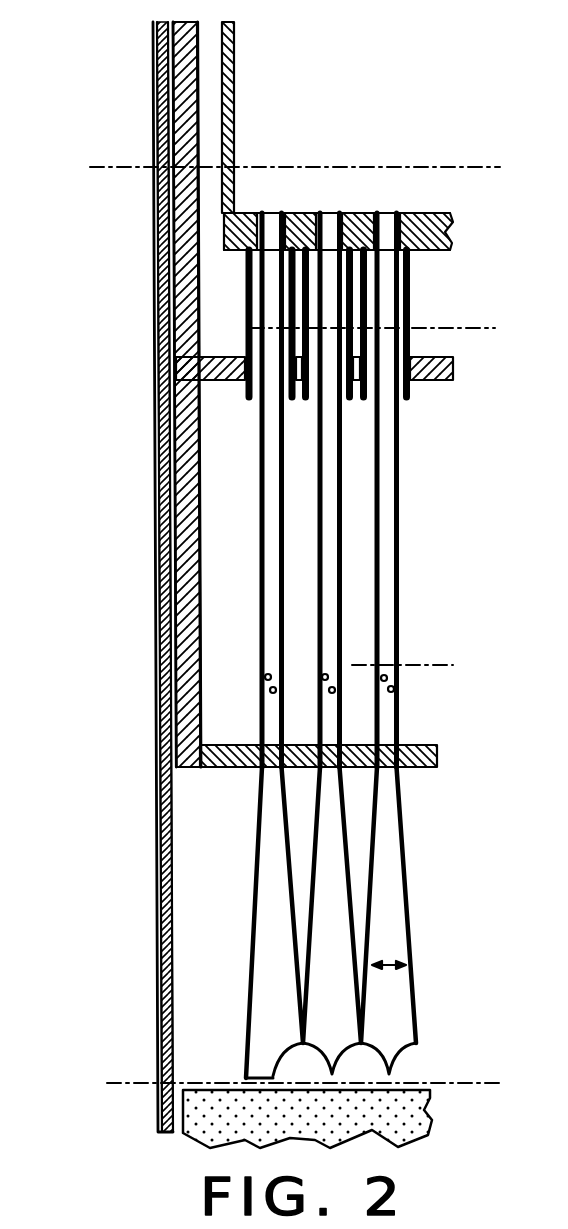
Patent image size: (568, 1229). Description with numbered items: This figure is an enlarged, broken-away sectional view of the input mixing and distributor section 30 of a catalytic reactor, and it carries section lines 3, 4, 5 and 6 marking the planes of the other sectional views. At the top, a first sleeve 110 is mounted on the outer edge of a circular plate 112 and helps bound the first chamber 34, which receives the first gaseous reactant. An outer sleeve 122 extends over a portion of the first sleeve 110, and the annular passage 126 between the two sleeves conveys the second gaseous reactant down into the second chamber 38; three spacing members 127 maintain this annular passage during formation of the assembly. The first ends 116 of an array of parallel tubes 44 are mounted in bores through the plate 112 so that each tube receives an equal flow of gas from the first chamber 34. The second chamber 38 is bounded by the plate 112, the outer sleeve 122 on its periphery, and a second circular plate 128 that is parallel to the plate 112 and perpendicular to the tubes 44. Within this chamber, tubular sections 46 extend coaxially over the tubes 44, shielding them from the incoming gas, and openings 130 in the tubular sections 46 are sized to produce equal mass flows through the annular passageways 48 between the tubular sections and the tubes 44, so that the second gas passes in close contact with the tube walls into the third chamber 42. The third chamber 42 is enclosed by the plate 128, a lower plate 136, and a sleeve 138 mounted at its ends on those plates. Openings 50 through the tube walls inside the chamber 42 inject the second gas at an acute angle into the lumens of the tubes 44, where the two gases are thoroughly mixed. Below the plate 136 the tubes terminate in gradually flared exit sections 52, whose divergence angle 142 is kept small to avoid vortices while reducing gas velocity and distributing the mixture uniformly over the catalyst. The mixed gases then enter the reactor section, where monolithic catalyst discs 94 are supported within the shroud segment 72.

The input mixing and distributor section 30 is at (126, 76).
The first chamber 34 is at (383, 152).
The second chamber 38 is at (222, 315).
The third chamber 42 is at (148, 394).
The tubes 44 is at (337, 505).
The tubular sections 46 is at (410, 345).
The annular passageways 48 is at (407, 398).
The openings 50 is at (400, 700).
The exit sections 52 is at (383, 903).
The shroud segment 72 is at (115, 577).
The monolithic catalyst discs 94 is at (407, 1102).
The first sleeve 110 is at (228, 54).
The circular plate 112 is at (441, 213).
The first ends 116 is at (385, 214).
The outer sleeve 122 is at (152, 217).
The annular passage 126 is at (212, 193).
The spacing members 127 is at (212, 88).
The circular plate 128 is at (453, 377).
The openings 130 is at (410, 277).
The plate 136 is at (437, 758).
The sleeve 138 is at (178, 498).
The angle 142 is at (389, 968).
The section line 3- 3 is at (486, 316).
The section line 4- 4 is at (445, 652).
The section line 5- 5 is at (483, 150).
The section line 6- 6 is at (485, 1098).